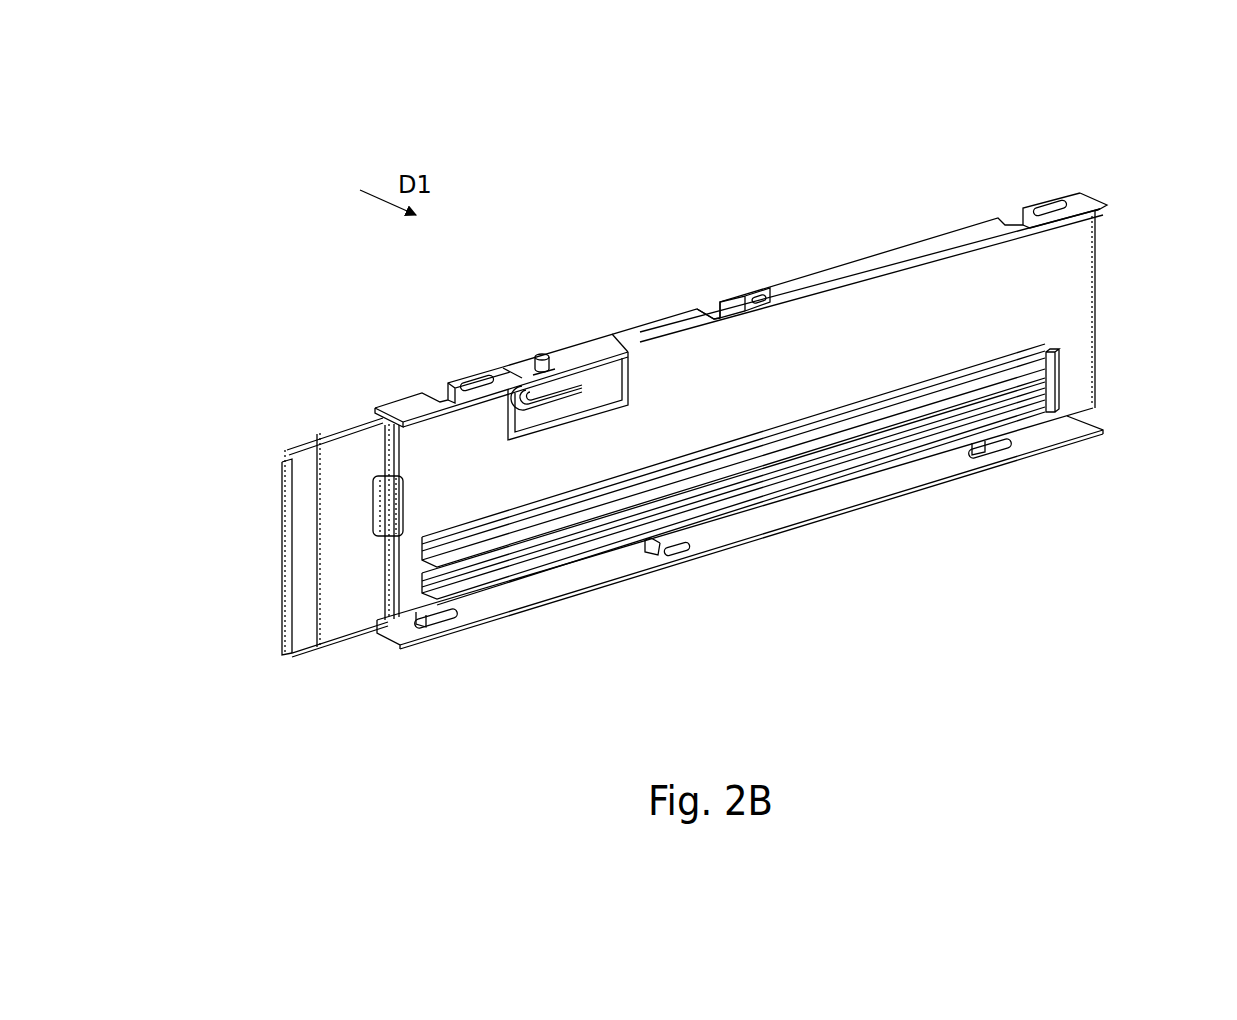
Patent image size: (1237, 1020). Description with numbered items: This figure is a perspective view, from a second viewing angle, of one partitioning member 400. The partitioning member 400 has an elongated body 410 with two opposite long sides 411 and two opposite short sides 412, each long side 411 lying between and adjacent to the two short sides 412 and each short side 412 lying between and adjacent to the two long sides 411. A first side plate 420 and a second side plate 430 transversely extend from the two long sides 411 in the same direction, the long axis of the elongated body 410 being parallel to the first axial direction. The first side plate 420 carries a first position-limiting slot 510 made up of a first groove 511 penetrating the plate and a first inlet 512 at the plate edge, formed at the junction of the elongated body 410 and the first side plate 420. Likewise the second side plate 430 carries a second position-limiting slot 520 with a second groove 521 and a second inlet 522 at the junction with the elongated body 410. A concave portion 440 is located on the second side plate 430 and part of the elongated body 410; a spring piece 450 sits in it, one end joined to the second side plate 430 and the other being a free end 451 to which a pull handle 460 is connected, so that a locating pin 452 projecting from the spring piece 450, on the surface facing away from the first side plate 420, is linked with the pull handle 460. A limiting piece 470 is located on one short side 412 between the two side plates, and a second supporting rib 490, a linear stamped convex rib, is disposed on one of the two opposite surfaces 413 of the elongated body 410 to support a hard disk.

The partitioning member 400 is at (1222, 69).
The elongated body 410 is at (1102, 314).
The long sides 411 is at (1006, 438).
The short sides 412 is at (1097, 368).
The opposite surfaces 413 is at (1070, 270).
The first side plate 420 is at (834, 497).
The second side plate 430 is at (936, 246).
The concave portion 440 is at (608, 393).
The spring piece 450 is at (570, 348).
The free end 451 is at (526, 372).
The locating pin 452 is at (548, 355).
The pull handle 460 is at (555, 402).
The limiting piece 470 is at (288, 528).
The second supporting rib 490 is at (442, 547).
The first position-limiting slot 510 is at (810, 600).
The first groove 511 is at (674, 551).
The first inlet 512 is at (648, 555).
The second position-limiting slot 520 is at (798, 165).
The second groove 521 is at (765, 303).
The second inlet 522 is at (712, 309).